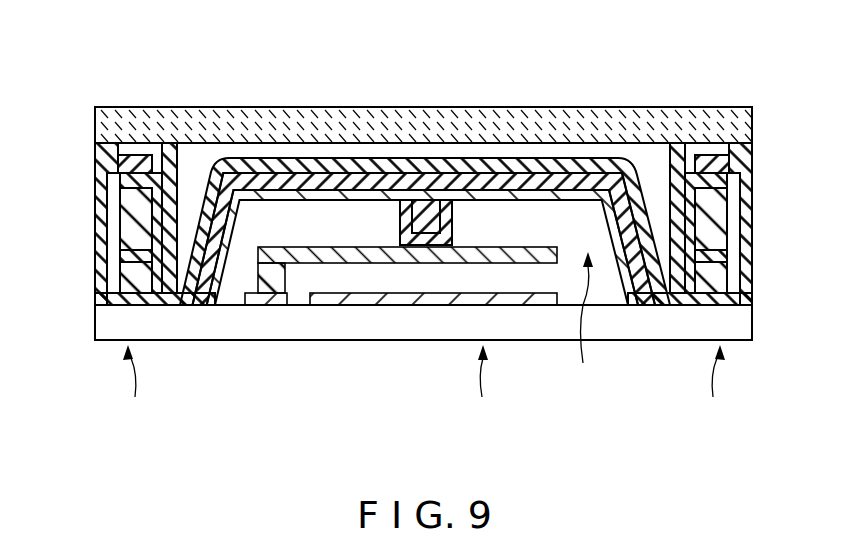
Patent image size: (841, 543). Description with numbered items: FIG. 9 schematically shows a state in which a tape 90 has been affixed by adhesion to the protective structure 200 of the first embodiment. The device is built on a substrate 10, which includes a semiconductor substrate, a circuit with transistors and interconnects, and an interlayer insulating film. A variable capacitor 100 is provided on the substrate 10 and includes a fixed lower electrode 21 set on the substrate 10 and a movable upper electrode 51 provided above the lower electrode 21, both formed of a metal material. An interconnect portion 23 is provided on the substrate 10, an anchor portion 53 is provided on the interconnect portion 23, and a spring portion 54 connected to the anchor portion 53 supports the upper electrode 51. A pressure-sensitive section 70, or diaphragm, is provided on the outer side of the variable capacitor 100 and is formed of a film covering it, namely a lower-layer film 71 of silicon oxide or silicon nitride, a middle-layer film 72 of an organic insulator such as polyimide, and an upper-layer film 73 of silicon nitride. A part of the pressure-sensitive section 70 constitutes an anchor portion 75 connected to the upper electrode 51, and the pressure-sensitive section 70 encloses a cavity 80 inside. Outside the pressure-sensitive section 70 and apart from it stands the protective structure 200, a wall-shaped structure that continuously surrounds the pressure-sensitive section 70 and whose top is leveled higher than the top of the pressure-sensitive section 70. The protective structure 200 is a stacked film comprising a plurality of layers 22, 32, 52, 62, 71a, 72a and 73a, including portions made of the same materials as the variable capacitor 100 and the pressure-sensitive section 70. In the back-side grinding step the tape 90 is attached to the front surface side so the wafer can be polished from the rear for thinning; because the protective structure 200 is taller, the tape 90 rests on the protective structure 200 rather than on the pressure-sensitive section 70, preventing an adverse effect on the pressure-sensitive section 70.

The substrate 10 is at (197, 340).
The lower electrode 21 is at (434, 305).
The layer 22 is at (132, 300).
The interconnect portion 23 is at (257, 305).
The layer 32 is at (112, 272).
The upper electrode 51 is at (530, 263).
The layer 52 is at (112, 246).
The anchor portion 53 is at (284, 278).
The spring portion 54 is at (272, 210).
The layer 62 is at (112, 213).
The pressure-sensitive section 70 is at (425, 156).
The lower-layer film 71 is at (507, 67).
The layer 71a is at (107, 178).
The middle-layer film 72 is at (433, 178).
The layer 72a is at (140, 155).
The upper-layer film 73 is at (481, 160).
The layer 73a is at (100, 151).
The anchor portion 75 is at (403, 225).
The cavity 80 is at (584, 321).
The tape 90 is at (557, 107).
The variable capacitor 100 is at (478, 385).
The protective structure 200 is at (424, 385).